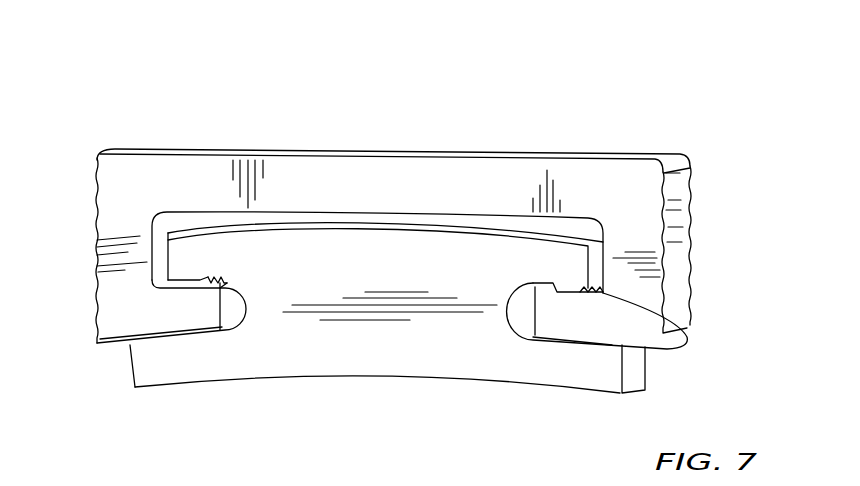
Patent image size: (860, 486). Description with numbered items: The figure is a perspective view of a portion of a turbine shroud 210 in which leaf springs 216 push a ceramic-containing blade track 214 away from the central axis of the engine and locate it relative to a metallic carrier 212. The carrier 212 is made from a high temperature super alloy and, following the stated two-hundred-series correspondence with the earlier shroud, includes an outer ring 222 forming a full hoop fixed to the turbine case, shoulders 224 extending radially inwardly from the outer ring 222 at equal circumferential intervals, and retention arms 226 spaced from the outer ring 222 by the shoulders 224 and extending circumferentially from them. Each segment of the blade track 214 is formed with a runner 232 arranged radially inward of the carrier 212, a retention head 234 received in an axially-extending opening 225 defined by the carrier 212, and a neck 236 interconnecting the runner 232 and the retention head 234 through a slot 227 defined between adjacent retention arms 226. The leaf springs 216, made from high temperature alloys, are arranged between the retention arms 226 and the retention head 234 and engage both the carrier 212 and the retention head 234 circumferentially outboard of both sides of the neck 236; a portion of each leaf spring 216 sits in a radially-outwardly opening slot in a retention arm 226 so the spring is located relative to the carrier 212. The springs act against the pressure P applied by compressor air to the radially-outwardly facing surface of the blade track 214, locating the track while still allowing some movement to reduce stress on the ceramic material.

The turbine shroud 210 is at (600, 110).
The carrier 212 is at (182, 145).
The blade track 214 is at (414, 387).
The leaf springs 216 is at (181, 243).
The outer ring 222 is at (390, 178).
The shoulders 224 is at (110, 194).
The axially-extending opening 225 is at (229, 223).
The retention arms 226 is at (176, 325).
The slot 227 is at (227, 302).
The runner 232 is at (315, 354).
The retention head 234 is at (201, 268).
The neck 236 is at (270, 310).
The pressure P is at (495, 226).